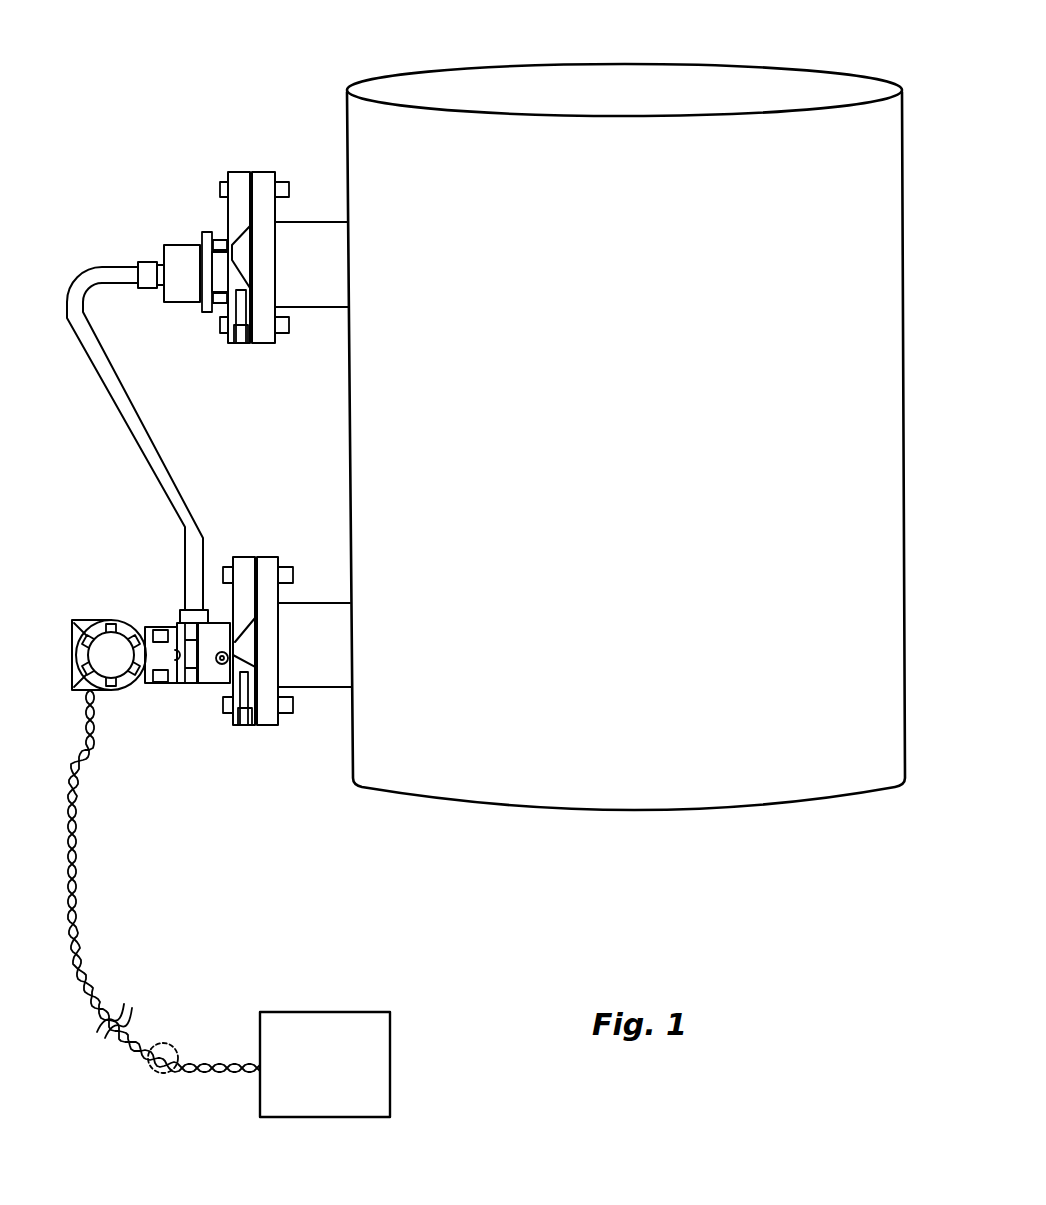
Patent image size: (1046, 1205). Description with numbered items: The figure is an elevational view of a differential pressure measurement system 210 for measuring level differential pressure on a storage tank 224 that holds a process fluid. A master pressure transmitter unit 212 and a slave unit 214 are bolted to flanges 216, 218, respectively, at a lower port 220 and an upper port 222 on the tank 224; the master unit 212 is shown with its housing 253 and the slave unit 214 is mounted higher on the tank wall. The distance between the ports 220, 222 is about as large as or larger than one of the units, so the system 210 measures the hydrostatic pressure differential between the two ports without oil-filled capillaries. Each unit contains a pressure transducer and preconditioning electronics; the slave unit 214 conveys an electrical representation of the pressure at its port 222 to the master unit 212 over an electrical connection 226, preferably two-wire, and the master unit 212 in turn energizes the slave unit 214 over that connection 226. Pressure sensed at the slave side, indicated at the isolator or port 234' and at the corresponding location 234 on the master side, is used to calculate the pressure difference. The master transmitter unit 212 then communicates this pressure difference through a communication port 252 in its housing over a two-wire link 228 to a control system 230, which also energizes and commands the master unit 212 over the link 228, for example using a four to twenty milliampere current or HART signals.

The differential pressure measurement system 210 is at (133, 110).
The master pressure transmitter unit 212 is at (167, 697).
The slave unit 214 is at (211, 326).
The flange 216 is at (270, 712).
The flange 218 is at (263, 172).
The port 220 is at (323, 650).
The port 222 is at (318, 226).
The storage tank 224 is at (630, 355).
The electrical connection 226 is at (143, 437).
The two-wire link 228 is at (177, 1044).
The control system 230 is at (342, 1071).
The isolation diaphragm 234 is at (293, 600).
The port 234' is at (293, 295).
The communication port 252 is at (75, 697).
The housing 253 is at (85, 612).